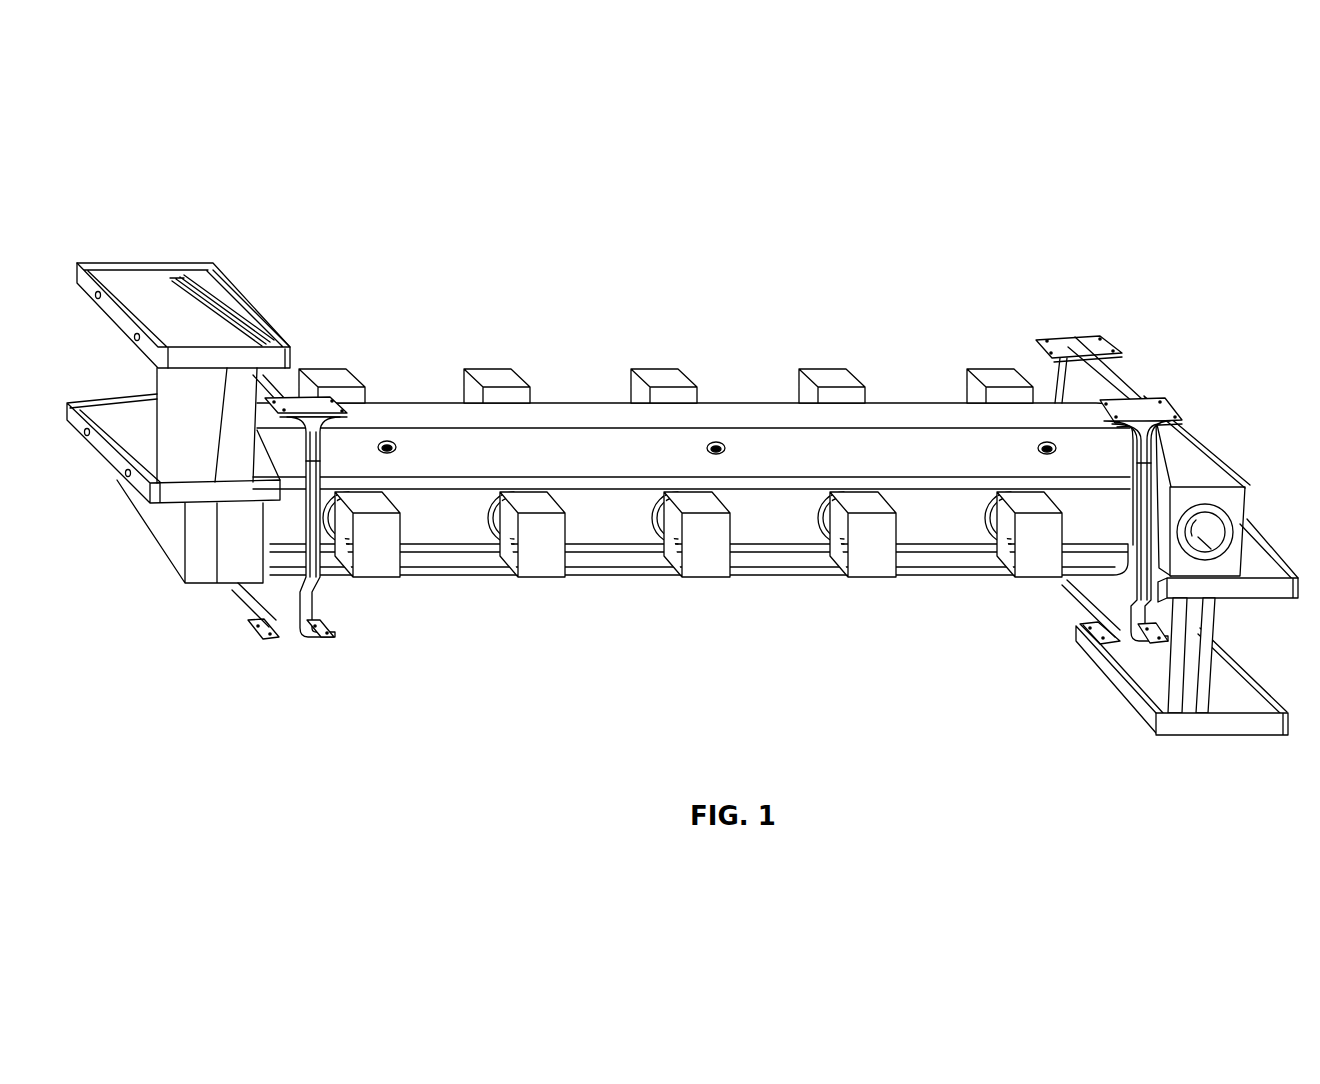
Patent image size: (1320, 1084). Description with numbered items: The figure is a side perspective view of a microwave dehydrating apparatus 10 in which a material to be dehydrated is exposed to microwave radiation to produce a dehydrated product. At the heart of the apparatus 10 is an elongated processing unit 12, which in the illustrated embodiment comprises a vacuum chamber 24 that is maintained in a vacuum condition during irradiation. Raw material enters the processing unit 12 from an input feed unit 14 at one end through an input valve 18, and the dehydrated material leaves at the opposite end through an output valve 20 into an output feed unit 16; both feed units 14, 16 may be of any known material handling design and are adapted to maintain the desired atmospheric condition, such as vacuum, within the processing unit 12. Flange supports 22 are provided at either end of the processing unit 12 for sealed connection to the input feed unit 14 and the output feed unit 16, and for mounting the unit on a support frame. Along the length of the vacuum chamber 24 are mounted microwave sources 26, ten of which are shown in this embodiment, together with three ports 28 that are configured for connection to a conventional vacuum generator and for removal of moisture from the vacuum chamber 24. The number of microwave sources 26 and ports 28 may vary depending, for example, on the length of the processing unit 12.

The dehydrating apparatus 10 is at (687, 490).
The processing unit 12 is at (768, 632).
The input feed unit 14 is at (160, 553).
The output feed unit 16 is at (1230, 450).
The input valve 18 is at (188, 292).
The output valve 20 is at (1187, 738).
The flange supports 22 is at (1052, 340).
The vacuum chamber 24 is at (595, 440).
The microwave source 26 is at (334, 378).
The port 28 is at (390, 442).